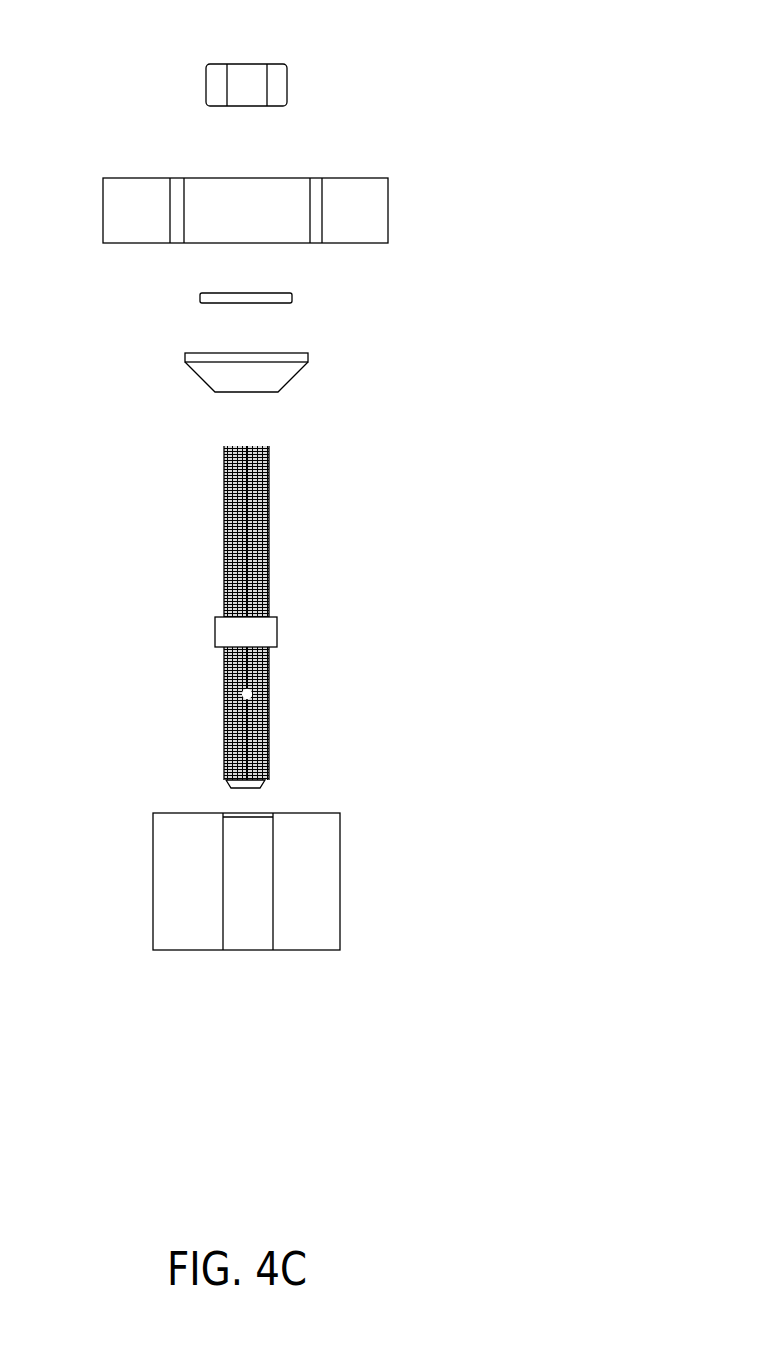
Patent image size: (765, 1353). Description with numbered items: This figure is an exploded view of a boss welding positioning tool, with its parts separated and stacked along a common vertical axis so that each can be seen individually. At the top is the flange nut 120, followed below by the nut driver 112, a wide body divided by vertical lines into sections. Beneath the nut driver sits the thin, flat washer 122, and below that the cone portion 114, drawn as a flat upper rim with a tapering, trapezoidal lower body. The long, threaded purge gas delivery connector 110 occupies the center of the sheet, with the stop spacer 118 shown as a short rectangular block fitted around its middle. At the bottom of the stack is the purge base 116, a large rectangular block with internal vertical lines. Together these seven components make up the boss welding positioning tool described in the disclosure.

The purge gas delivery connector 110 is at (270, 496).
The nut driver 112 is at (355, 178).
The cone portion 114 is at (300, 363).
The purge base 116 is at (292, 813).
The stop spacer 118 is at (277, 630).
The flange nut 120 is at (258, 64).
The washer 122 is at (292, 300).